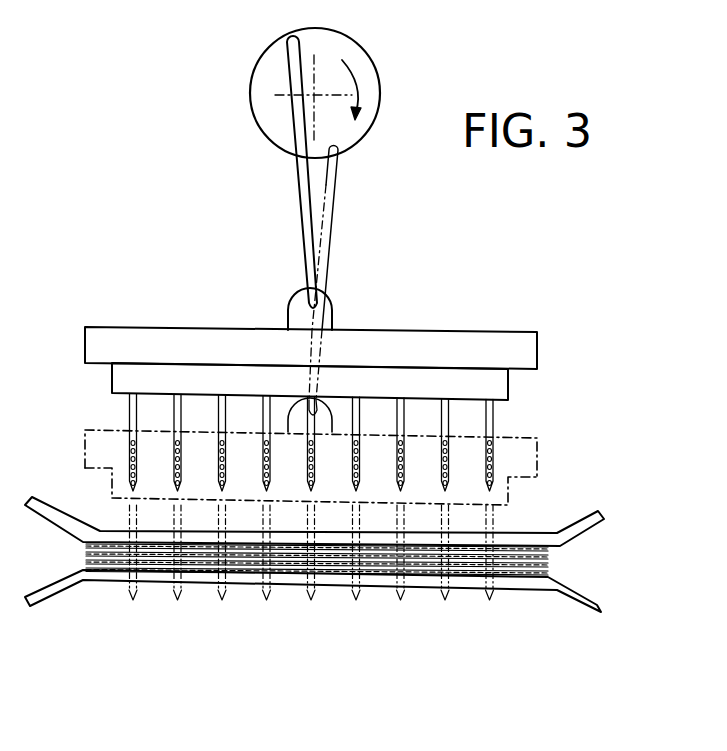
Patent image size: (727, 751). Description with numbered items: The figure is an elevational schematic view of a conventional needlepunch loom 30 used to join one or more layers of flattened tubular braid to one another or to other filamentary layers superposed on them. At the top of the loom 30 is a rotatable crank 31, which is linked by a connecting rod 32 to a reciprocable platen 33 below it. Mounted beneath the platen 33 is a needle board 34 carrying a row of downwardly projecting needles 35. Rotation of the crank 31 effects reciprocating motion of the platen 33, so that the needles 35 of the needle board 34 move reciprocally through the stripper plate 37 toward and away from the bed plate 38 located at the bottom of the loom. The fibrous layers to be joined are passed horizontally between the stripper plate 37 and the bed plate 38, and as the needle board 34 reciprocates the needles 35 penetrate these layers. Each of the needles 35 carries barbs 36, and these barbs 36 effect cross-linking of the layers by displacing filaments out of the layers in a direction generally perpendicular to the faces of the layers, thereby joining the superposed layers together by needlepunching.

The needlepunch loom 30 is at (145, 212).
The rotatable crank 31 is at (338, 47).
The connecting rod 32 is at (320, 222).
The reciprocable platen 33 is at (488, 336).
The needle board 34 is at (506, 387).
The needles 35 is at (172, 407).
The barbs 36 is at (128, 452).
The stripper plate 37 is at (100, 528).
The bed plate 38 is at (113, 575).